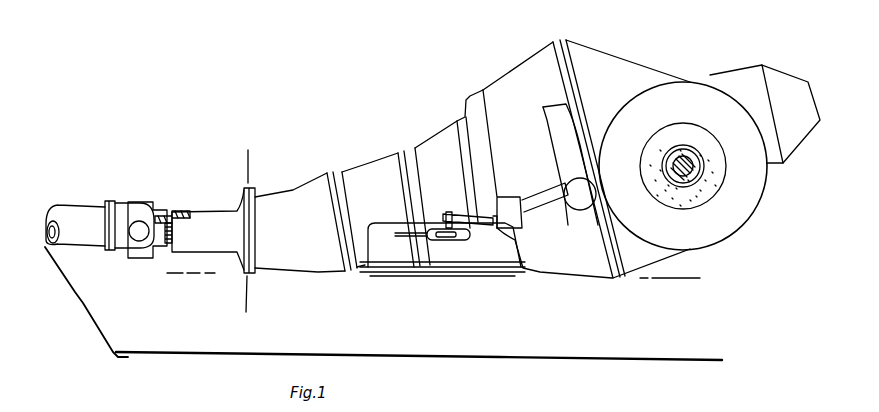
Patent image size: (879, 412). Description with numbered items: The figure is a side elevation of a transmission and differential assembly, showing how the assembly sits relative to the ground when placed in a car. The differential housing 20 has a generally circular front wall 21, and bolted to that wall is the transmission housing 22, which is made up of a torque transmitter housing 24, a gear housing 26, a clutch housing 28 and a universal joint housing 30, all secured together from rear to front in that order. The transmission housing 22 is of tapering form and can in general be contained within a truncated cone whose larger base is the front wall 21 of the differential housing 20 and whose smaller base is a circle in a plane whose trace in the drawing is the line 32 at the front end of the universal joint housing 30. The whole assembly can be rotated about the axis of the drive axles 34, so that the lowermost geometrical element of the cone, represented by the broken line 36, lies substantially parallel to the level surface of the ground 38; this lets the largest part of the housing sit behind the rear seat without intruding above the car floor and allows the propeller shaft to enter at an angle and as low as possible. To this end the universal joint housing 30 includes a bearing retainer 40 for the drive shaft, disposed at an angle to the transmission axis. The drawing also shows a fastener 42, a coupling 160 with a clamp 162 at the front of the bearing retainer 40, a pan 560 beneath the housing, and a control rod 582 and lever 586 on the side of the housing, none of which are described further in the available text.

The differential housing 20 is at (691, 88).
The front wall 21 is at (573, 68).
The transmission housing 22 is at (521, 151).
The torque transmitter housing 24 is at (525, 72).
The gear housing 26 is at (424, 150).
The clutch housing 28 is at (373, 208).
The universal joint housing 30 is at (273, 204).
The line 32 is at (248, 168).
The drive axles 34 is at (668, 153).
The broken line 36 is at (193, 274).
The ground 38 is at (432, 352).
The bearing retainer 40 is at (203, 224).
The bolt 42 is at (166, 232).
The universal joint coupling 160 is at (128, 207).
The clamp 162 is at (183, 210).
The oil pan 560 is at (483, 254).
The control rod 582 is at (415, 238).
The shift lever 586 is at (548, 198).